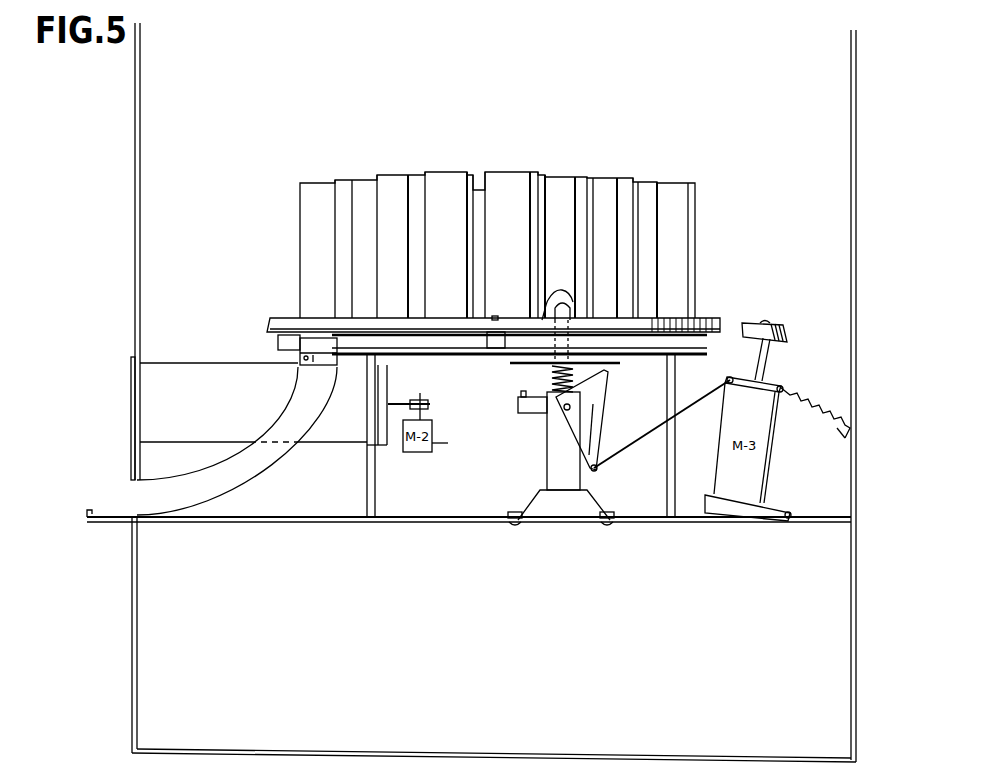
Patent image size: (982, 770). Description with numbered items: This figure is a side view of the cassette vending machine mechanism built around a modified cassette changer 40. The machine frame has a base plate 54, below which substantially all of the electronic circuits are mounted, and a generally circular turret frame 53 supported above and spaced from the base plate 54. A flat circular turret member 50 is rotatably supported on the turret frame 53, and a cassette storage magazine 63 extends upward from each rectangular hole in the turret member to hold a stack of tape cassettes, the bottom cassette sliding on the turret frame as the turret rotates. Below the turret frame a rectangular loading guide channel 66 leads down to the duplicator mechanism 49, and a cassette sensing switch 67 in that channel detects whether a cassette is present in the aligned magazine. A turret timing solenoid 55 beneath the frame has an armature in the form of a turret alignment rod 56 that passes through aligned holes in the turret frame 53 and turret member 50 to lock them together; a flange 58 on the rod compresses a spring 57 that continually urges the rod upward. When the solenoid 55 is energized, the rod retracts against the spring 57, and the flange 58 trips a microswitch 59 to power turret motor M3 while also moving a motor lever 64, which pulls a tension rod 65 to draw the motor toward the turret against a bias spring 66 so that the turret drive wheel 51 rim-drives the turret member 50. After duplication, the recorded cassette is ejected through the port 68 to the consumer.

The cassette changer 40 is at (858, 342).
The duplicator mechanism 49 is at (150, 390).
The turret member 50 is at (276, 318).
The turret drive wheel 51 is at (785, 325).
The turret frame 53 is at (703, 335).
The base plate 54 is at (822, 522).
The turret timing solenoid 55 is at (548, 463).
The turret alignment rod 56 is at (573, 302).
The spring 57 is at (550, 373).
The flange 58 is at (510, 364).
The microswitch 59 is at (521, 405).
The cassette storage magazine 63 is at (603, 172).
The motor lever 64 is at (592, 425).
The tension rod 65 is at (643, 443).
The bias spring / guide channel 66 is at (808, 395).
The cassette sensing switch 67 is at (278, 345).
The port 68 is at (135, 503).